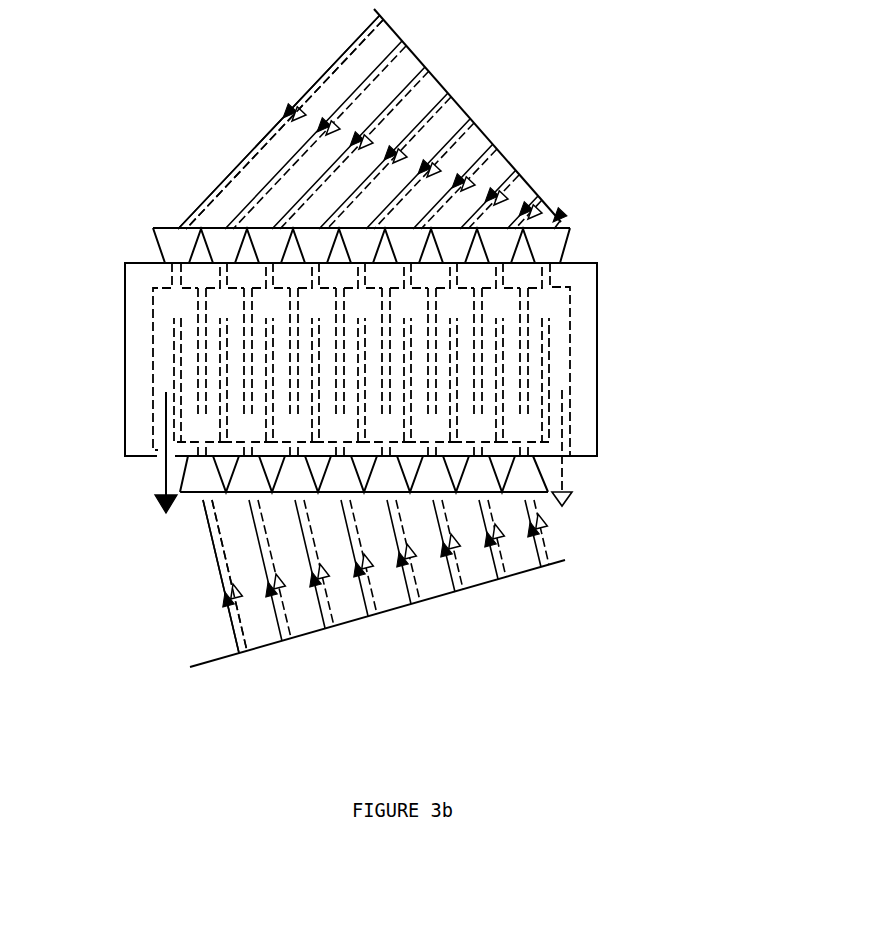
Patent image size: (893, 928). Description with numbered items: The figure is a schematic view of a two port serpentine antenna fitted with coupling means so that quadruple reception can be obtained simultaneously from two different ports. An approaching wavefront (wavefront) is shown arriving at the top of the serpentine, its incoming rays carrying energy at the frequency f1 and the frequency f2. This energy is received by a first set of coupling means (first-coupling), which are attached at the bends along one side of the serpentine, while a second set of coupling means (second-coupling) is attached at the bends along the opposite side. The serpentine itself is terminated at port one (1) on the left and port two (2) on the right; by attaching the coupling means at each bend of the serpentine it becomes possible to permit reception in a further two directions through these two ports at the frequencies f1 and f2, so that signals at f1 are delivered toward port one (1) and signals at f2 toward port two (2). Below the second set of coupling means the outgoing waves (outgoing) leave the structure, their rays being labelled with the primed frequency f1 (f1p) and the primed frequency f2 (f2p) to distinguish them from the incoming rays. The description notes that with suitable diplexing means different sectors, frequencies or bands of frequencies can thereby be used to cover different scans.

The port one 1 is at (160, 462).
The port two 2 is at (570, 460).
The approaching wavefront is at (470, 110).
The coupling means first-coupling is at (575, 280).
The coupling means second-coupling is at (538, 450).
The outgoing waves outgoing is at (377, 583).
The frequency f1 is at (273, 130).
The frequency f2 is at (258, 150).
The frequency f1' wave f1p is at (233, 615).
The frequency f2' wave f2p is at (238, 613).